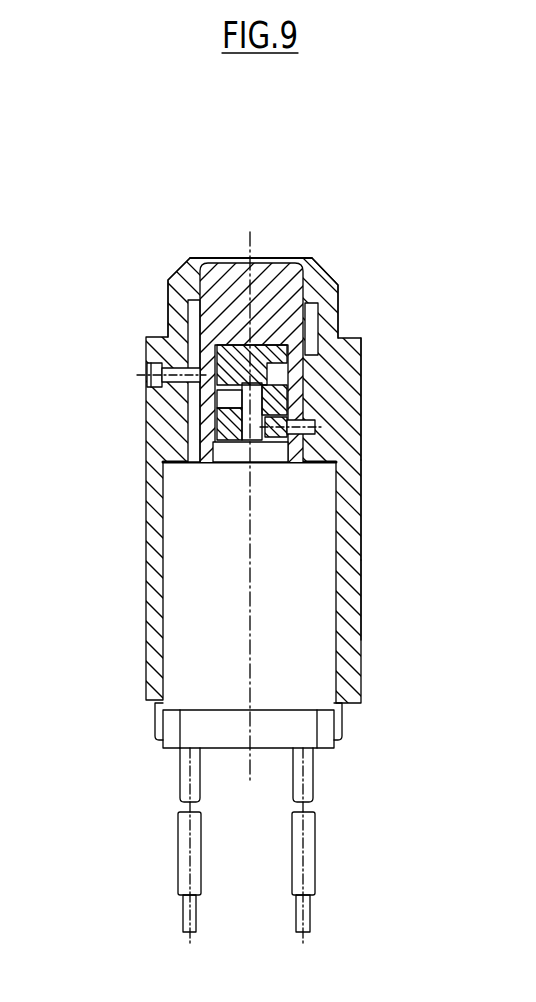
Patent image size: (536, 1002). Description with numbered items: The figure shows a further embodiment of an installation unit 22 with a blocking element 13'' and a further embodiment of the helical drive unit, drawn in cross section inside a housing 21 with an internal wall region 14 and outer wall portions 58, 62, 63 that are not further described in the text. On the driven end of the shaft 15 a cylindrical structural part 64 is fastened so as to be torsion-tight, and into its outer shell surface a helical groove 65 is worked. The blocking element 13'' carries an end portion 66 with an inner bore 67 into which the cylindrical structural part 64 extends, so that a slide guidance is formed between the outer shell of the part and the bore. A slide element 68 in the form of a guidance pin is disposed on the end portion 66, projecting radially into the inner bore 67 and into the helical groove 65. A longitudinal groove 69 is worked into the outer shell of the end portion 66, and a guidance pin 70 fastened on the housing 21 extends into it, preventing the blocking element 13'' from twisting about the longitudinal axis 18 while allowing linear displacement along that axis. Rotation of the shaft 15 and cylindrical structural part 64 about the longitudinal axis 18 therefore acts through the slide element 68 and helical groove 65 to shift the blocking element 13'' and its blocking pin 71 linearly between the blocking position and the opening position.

The blocking element 13'' is at (257, 321).
The housing 14 is at (293, 645).
The shaft 15 is at (225, 450).
The longitudinal axis 18 is at (247, 757).
The housing 21 is at (346, 687).
The installation unit 22 is at (128, 645).
The housing wall 58 is at (535, 307).
The housing wall section 62 is at (535, 478).
The housing wall section 63 is at (535, 422).
The cylindrical structural part 64 is at (280, 397).
The helical groove 65 is at (225, 398).
The end portion 66 is at (215, 422).
The inner bore 67 is at (285, 347).
The slide element 68 is at (288, 427).
The longitudinal groove 69 is at (165, 336).
The guidance pin 70 is at (147, 368).
The blocking pin 71 is at (255, 258).